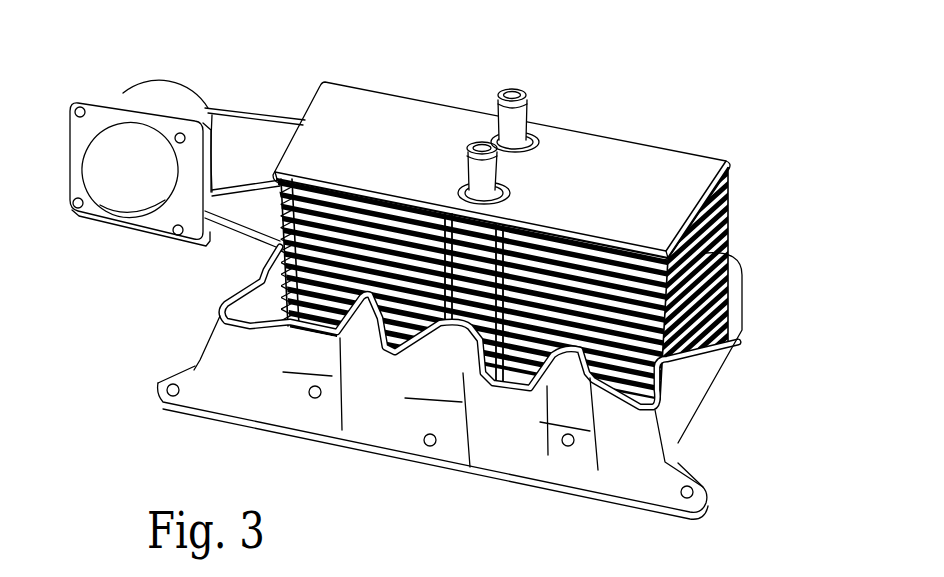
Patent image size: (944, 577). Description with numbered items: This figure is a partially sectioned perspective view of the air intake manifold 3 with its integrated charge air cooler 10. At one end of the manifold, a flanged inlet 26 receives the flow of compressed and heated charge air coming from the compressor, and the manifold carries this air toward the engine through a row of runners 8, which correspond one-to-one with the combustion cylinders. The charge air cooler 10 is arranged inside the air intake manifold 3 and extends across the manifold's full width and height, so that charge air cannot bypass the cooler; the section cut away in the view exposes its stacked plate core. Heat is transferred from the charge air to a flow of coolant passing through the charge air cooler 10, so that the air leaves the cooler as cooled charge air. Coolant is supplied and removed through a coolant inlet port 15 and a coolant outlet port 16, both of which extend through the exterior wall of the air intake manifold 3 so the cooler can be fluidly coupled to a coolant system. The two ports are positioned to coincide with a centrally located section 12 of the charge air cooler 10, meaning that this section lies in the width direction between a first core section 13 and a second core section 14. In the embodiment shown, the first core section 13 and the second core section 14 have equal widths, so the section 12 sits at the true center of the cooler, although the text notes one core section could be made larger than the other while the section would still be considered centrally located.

The air intake manifold 3 is at (723, 337).
The runners 8 is at (220, 358).
The charge air cooler 10 is at (633, 132).
The centrally located section 12 is at (473, 282).
The first core section 13 is at (343, 253).
The second core section 14 is at (598, 320).
The coolant inlet port 15 is at (467, 150).
The coolant outlet port 16 is at (529, 93).
The inlet 26 is at (122, 177).